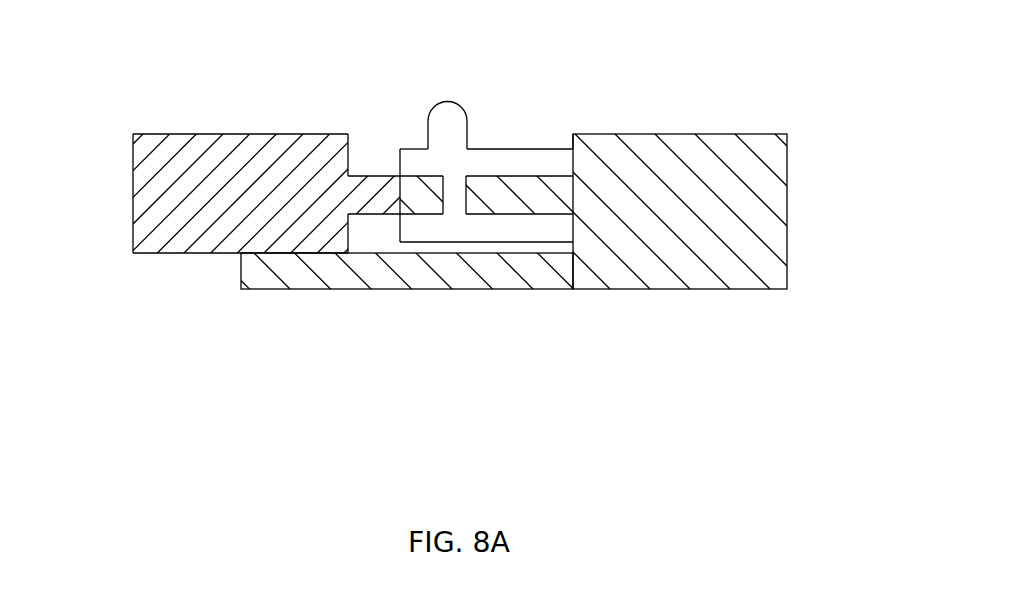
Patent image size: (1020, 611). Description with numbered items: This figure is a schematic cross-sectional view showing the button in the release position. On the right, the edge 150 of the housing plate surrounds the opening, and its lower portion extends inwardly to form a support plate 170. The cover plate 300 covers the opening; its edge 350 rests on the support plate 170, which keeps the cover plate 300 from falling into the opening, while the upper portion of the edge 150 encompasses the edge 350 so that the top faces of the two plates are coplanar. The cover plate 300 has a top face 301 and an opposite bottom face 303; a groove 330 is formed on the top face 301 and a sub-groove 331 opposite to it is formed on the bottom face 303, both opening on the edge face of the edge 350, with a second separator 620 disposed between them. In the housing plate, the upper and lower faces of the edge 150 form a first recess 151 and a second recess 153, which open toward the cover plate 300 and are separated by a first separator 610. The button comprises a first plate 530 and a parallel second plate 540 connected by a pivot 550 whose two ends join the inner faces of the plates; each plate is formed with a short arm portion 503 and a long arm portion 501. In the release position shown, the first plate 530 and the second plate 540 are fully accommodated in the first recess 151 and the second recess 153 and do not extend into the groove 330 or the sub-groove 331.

The edge 150 is at (573, 162).
The first recess 151 is at (530, 147).
The second recess 153 is at (545, 247).
The support plate 170 is at (301, 278).
The cover plate 300 is at (148, 198).
The top face 301 is at (208, 132).
The bottom face 303 is at (200, 256).
The groove 330 is at (363, 148).
The sub-groove 331 is at (367, 238).
The edge 350 is at (347, 153).
The long arm portion 501 is at (557, 160).
The short arm portion 503 is at (417, 162).
The first plate 530 is at (494, 162).
The second plate 540 is at (493, 228).
The pivot 550 is at (459, 195).
The first separator 610 is at (545, 195).
The second separator 620 is at (378, 193).